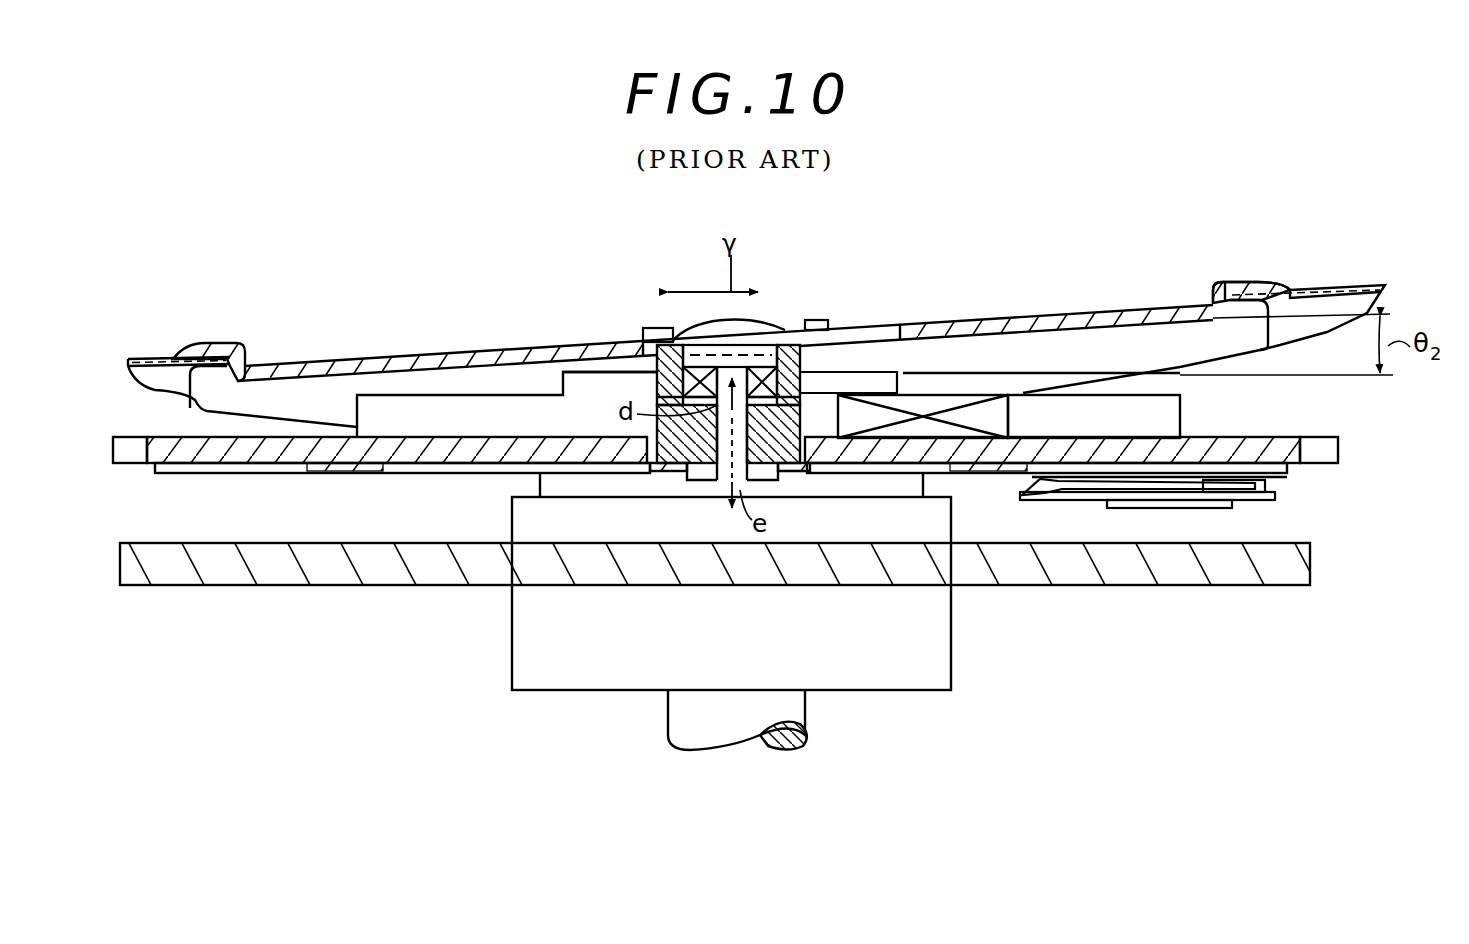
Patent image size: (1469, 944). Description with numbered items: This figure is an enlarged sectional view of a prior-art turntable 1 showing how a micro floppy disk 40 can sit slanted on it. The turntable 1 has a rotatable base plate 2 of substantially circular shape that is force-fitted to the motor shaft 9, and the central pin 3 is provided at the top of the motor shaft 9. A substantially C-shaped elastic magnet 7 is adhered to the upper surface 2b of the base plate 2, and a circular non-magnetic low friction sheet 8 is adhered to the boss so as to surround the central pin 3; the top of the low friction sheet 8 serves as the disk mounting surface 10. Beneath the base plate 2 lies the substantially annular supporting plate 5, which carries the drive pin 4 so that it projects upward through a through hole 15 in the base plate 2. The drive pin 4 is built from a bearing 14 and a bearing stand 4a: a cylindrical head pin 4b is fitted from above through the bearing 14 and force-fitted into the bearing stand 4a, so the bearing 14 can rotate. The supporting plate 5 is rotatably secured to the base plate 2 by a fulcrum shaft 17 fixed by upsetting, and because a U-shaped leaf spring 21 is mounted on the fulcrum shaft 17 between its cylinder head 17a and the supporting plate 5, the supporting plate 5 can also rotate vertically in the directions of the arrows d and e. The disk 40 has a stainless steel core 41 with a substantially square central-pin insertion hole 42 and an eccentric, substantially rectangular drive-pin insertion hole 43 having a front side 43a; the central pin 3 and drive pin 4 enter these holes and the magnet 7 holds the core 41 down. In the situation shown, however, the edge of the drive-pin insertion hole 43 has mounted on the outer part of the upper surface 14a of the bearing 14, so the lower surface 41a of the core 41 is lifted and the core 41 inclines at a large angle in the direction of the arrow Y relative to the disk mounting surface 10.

The turntable 1 is at (1322, 472).
The rotatable base plate 2 is at (1320, 448).
The upper surface of the base plate 2b is at (1249, 437).
The central pin 3 is at (740, 317).
The drive pin 4 is at (812, 357).
The bearing stand 4a is at (708, 472).
The cylindrical head pin 4b is at (765, 355).
The supporting plate 5 is at (292, 473).
The magnet 7 is at (988, 418).
The low friction sheet 8 is at (588, 373).
The motor shaft 9 is at (797, 718).
The disk mounting surface 10 is at (610, 373).
The bearing 14 is at (803, 365).
The upper surface of the bearing 14a is at (806, 318).
The through hole 15 is at (800, 473).
The fulcrum shaft 17 is at (1153, 490).
The cylinder head of the fulcrum shaft 17a is at (1218, 507).
The U-shaped leaf spring 21 is at (1272, 488).
The micro floppy disk 40 is at (153, 366).
The core 41 is at (228, 348).
The lower surface of the core 41a is at (207, 404).
The central-pin insertion hole 42 is at (812, 320).
The drive-pin insertion hole 43 is at (890, 330).
The front side of the insertion hole 43a is at (663, 341).